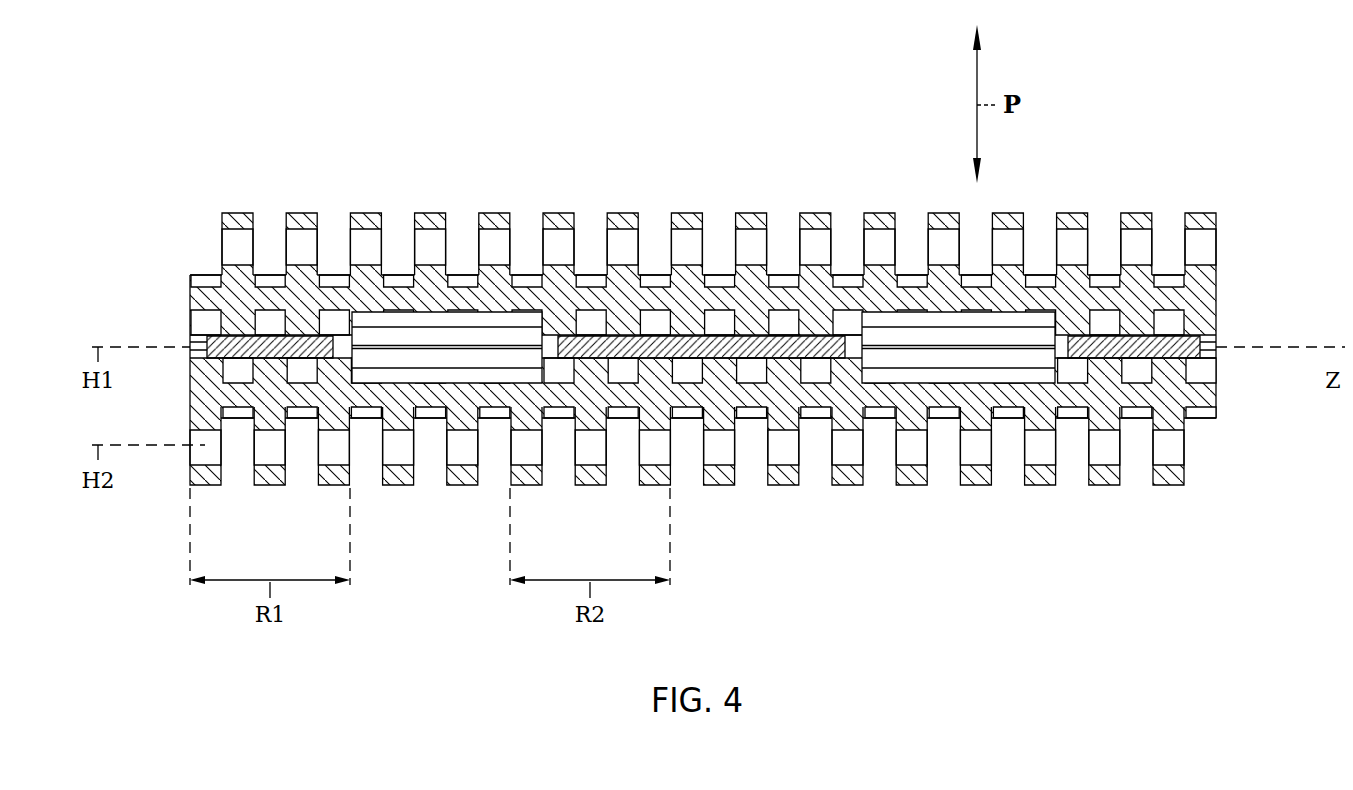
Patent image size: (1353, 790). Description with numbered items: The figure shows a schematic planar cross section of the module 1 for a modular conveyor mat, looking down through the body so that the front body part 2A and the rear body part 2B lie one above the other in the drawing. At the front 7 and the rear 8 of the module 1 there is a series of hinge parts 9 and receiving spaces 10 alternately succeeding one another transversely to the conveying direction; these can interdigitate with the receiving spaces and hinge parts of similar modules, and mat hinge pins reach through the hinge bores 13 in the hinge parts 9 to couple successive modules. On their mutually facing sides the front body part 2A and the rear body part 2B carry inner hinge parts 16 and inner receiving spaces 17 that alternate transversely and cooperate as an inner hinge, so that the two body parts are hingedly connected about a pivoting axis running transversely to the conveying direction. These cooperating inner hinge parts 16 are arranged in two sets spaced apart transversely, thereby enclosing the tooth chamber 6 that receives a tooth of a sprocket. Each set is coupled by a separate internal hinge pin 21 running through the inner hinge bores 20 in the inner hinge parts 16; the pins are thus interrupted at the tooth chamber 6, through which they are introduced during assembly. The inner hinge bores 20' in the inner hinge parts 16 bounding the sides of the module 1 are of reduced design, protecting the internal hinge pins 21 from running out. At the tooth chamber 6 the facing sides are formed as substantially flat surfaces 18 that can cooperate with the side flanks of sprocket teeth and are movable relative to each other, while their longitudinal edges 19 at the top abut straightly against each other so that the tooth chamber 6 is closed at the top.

The module 1 is at (819, 103).
The front body part 2A is at (1168, 299).
The rear body part 2B is at (1168, 395).
The tooth chamber 6 is at (488, 368).
The front 7 is at (622, 203).
The rear 8 is at (591, 495).
The hinge part 9 is at (490, 213).
The receiving space 10 is at (529, 240).
The hinge bore 13 is at (326, 445).
The inner hinge part 16 is at (230, 330).
The inner receiving space 17 is at (238, 372).
The flat surface 18 is at (373, 318).
The longitudinal edge 19 is at (430, 349).
The inner hinge bore 20 is at (344, 238).
The inner hinge bore at the side 20' is at (148, 322).
The internal hinge pin 21 is at (1135, 346).